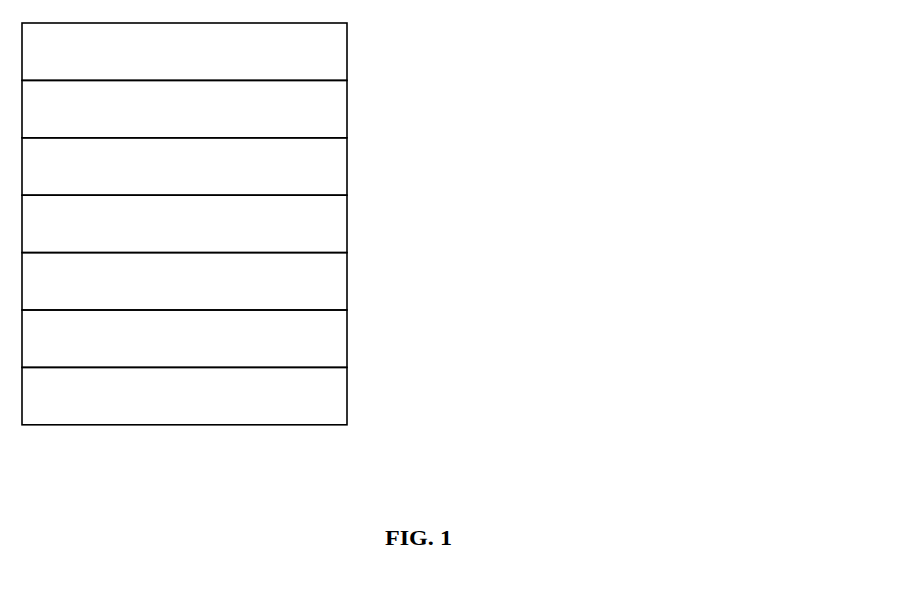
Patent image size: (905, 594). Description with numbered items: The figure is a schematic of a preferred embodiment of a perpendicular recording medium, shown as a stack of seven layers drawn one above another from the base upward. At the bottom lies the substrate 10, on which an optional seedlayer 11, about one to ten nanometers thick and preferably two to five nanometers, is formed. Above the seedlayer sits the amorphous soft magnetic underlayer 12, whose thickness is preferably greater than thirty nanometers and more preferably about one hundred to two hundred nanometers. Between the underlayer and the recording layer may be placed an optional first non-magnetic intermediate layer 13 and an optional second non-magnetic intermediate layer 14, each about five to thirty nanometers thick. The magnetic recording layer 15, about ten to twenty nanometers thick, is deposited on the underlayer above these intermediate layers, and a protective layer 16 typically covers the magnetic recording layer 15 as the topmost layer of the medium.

The protective layer 16 is at (284, 51).
The magnetic recording layer 15 is at (326, 108).
The second non-magnetic intermediate layer 14 is at (432, 166).
The first non-magnetic intermediate layer 13 is at (429, 223).
The amorphous soft magnetic underlayer 12 is at (327, 281).
The seedlayer 11 is at (302, 338).
The substrate 10 is at (250, 395).